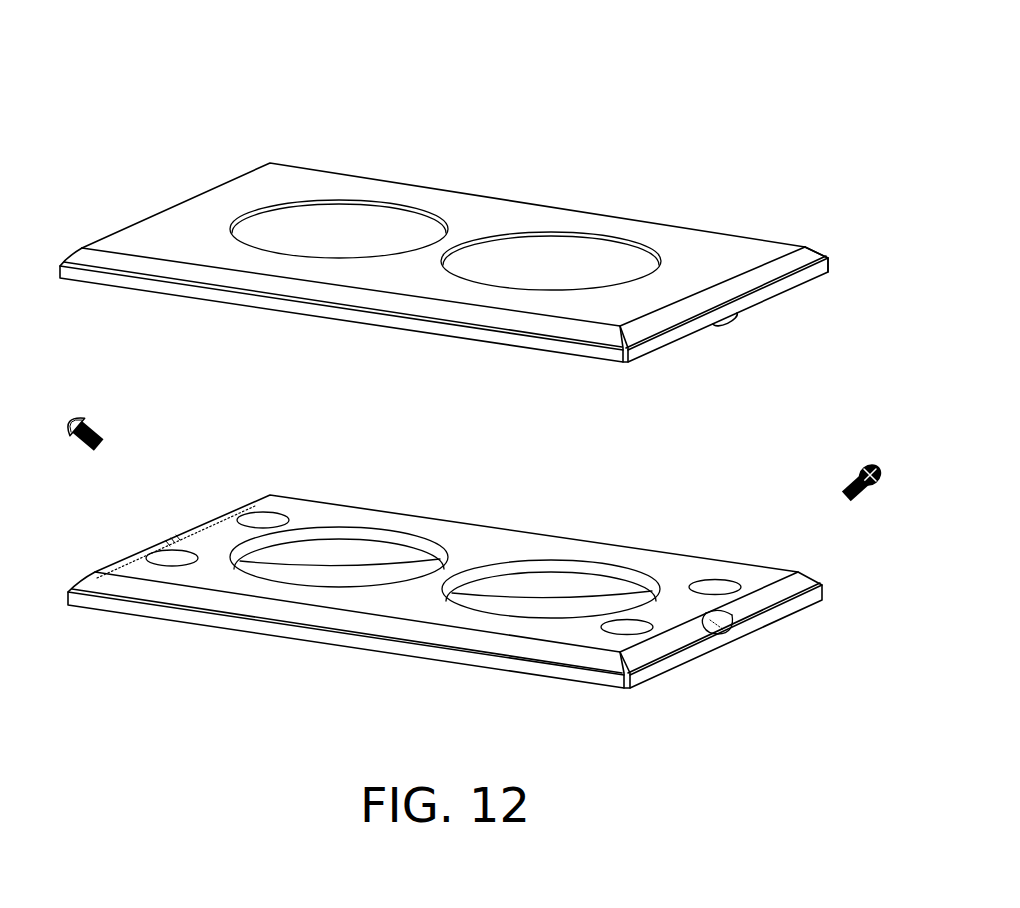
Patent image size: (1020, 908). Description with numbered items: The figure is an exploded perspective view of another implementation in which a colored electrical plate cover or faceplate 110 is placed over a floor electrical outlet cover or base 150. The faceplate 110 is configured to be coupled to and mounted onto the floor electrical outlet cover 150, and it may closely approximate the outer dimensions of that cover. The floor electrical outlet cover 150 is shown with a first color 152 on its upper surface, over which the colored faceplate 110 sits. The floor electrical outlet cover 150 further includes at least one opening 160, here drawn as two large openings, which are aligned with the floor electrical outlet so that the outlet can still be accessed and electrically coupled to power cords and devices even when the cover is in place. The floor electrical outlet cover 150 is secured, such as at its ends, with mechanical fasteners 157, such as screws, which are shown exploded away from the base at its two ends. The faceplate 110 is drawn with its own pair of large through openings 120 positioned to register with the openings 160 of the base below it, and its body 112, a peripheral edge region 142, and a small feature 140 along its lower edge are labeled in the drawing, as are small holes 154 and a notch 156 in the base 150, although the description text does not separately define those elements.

The colored electrical plate cover 110 is at (150, 115).
The cover plate 112 is at (490, 203).
The openings 120 is at (355, 244).
The tab 140 is at (726, 321).
The edge 142 is at (834, 242).
The floor electrical outlet cover 150 is at (68, 558).
The first color 152 is at (510, 556).
The fastener holes 154 is at (718, 581).
The notch 156 is at (724, 638).
The mechanical fasteners 157 is at (88, 413).
The opening 160 is at (355, 582).